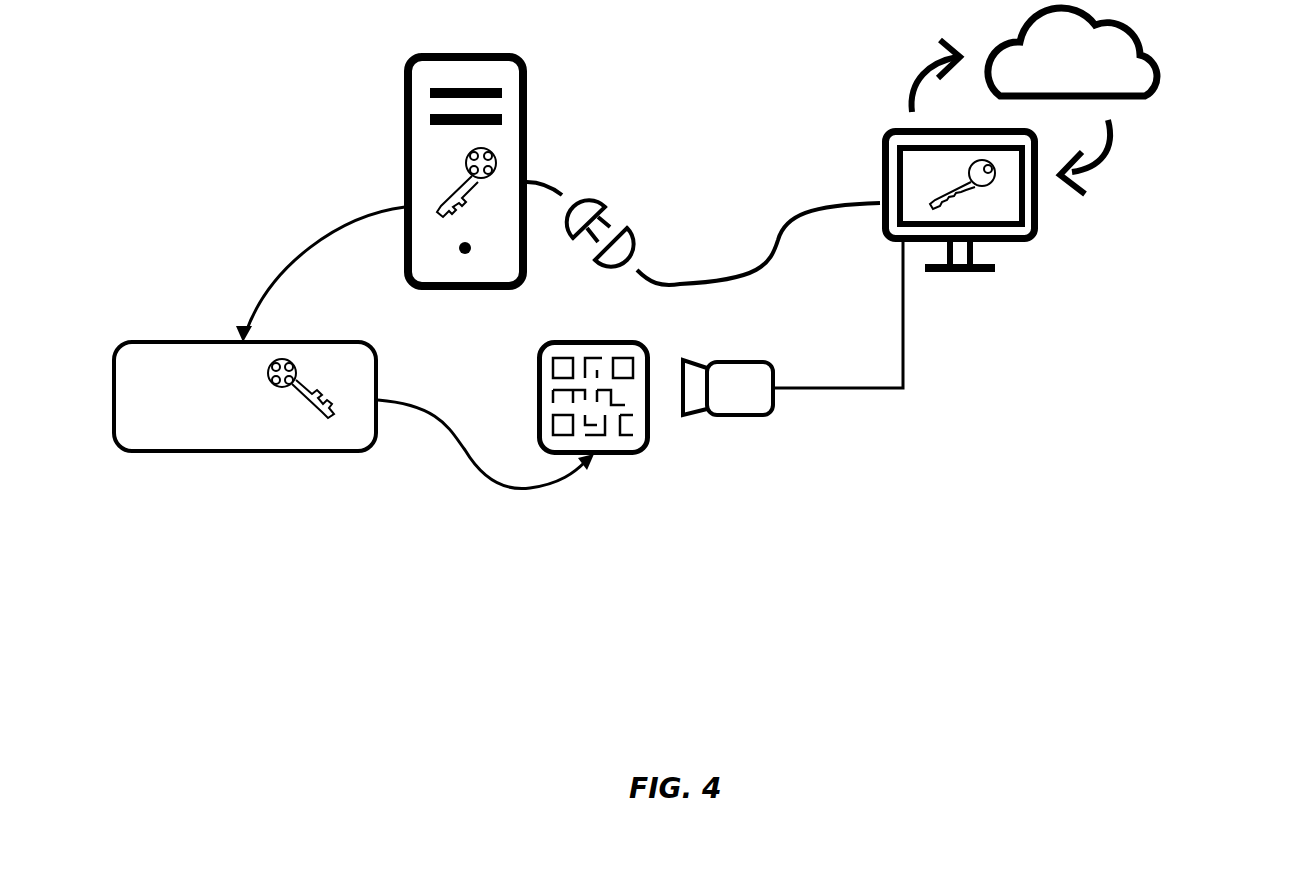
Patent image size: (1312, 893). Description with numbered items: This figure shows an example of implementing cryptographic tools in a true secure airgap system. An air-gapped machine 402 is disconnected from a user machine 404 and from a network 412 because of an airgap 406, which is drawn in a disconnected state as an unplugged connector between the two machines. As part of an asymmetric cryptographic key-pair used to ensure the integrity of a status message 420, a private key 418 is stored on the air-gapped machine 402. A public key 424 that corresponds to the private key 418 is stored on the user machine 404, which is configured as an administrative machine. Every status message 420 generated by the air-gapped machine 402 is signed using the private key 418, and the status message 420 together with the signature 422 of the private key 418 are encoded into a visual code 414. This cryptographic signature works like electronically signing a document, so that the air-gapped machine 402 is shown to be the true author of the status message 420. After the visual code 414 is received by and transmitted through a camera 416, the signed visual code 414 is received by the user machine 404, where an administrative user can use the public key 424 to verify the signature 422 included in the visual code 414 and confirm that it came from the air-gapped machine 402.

The air-gapped machine 402 is at (527, 117).
The user machine 404 is at (1038, 230).
The airgap 406 is at (617, 212).
The network 412 is at (1160, 55).
The visual code 414 is at (537, 373).
The camera 416 is at (730, 362).
The private key 418 is at (440, 207).
The status message 420 is at (167, 340).
The signature 422 is at (300, 360).
The public key 424 is at (925, 195).